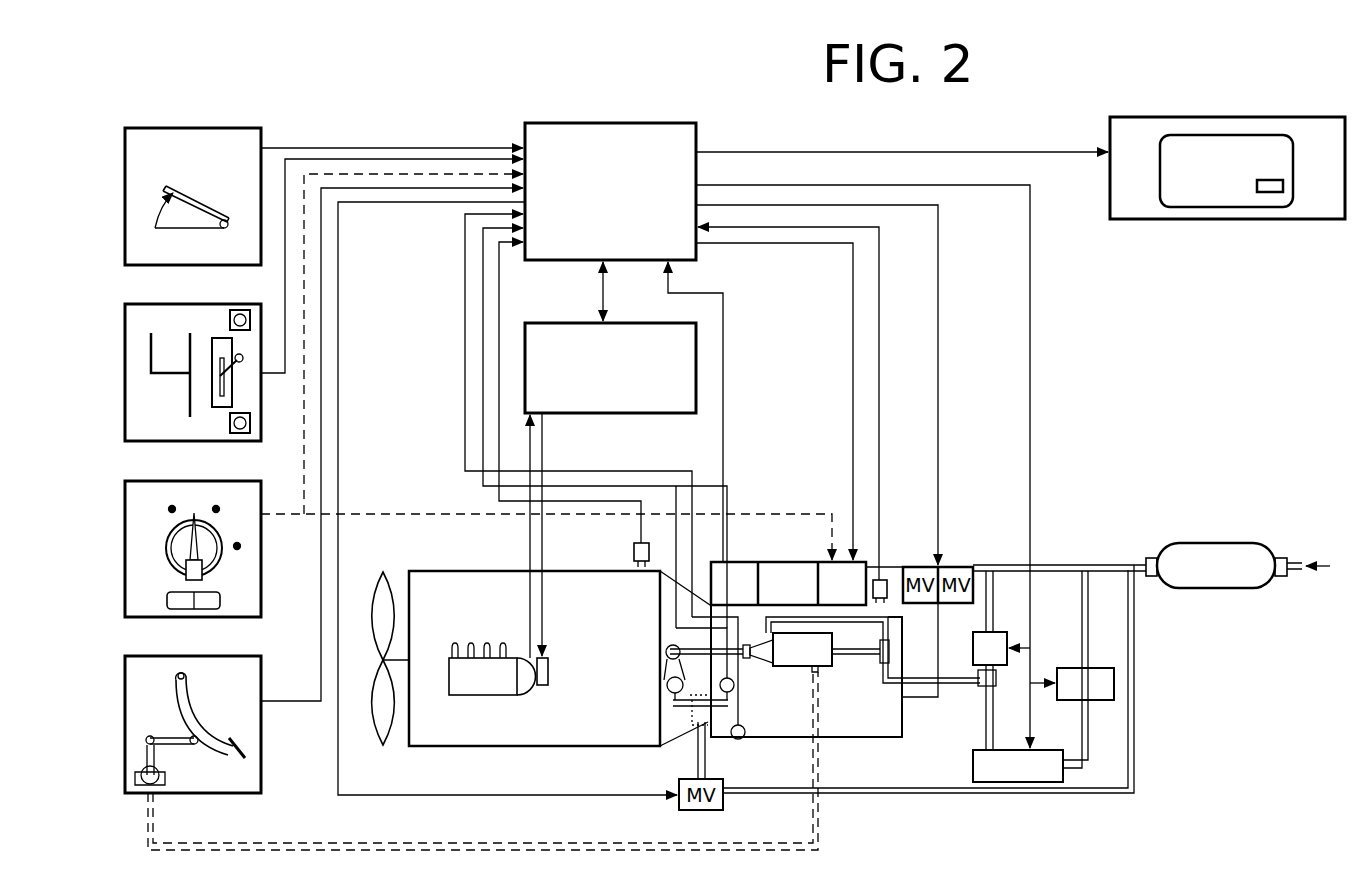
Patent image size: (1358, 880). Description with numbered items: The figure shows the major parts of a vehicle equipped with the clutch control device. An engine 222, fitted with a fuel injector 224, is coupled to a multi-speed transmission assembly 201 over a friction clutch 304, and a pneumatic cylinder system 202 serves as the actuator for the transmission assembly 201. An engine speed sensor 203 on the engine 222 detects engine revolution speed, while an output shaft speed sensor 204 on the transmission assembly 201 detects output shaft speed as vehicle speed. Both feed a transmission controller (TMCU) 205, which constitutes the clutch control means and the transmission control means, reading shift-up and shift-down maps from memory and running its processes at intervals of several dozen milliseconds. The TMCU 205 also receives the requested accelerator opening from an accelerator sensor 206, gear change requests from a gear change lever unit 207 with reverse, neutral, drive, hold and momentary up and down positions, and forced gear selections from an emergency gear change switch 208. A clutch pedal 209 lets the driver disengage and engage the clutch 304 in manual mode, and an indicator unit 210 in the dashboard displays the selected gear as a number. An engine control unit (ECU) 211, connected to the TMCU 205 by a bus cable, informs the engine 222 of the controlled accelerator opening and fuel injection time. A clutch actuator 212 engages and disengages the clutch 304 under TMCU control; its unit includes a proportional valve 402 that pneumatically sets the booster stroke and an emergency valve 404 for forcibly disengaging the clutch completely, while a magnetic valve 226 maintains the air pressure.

The multi-speed transmission assembly 201 is at (840, 737).
The pneumatic cylinder system 202 is at (828, 562).
The engine speed sensor 203 is at (634, 550).
The output shaft speed sensor 204 is at (887, 586).
The controller (TMCU) 205 is at (643, 100).
The accelerator sensor 206 is at (125, 197).
The gear change lever unit 207 is at (125, 376).
The emergency gear change switch 208 is at (125, 546).
The clutch pedal 209 is at (125, 711).
The indicator unit 210 is at (1250, 90).
The engine control unit (ECU) 211 is at (575, 297).
The clutch actuator 212 is at (800, 666).
The engine 222 is at (494, 545).
The fuel injector 224 is at (486, 695).
The magnetic valve 226 is at (1114, 683).
The friction clutch 304 is at (678, 742).
The proportional valve 402 is at (1015, 782).
The emergency valve 404 is at (1000, 632).